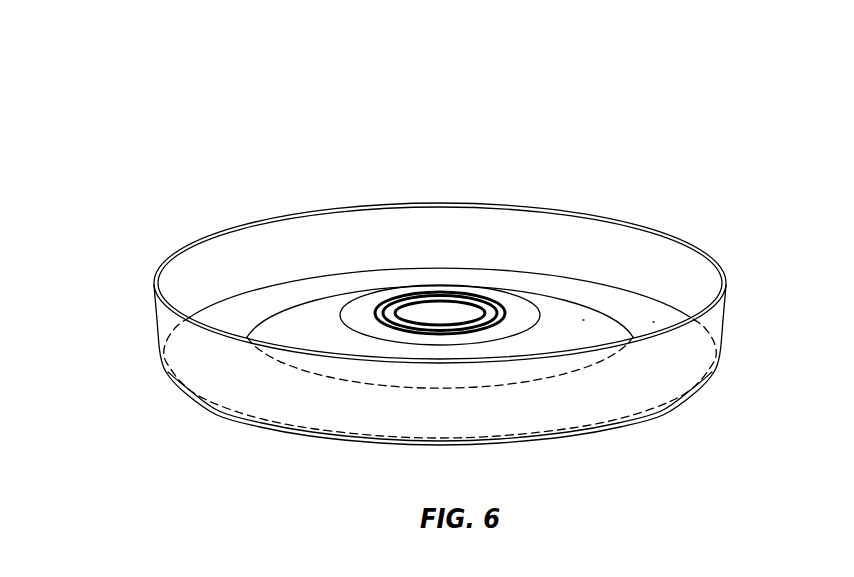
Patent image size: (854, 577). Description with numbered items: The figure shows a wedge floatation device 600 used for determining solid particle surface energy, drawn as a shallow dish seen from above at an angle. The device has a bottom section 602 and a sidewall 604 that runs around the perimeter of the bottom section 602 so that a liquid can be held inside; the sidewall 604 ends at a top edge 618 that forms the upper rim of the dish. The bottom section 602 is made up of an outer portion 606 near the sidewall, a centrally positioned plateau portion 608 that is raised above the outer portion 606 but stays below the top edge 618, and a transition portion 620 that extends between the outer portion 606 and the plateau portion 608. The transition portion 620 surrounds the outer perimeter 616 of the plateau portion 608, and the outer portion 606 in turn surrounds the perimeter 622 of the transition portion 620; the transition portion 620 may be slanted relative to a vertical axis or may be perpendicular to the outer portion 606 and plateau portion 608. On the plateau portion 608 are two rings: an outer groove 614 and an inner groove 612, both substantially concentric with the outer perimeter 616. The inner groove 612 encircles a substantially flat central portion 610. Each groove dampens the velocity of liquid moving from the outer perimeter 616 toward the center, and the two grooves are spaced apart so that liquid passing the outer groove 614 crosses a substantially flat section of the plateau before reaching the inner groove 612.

The wedge floatation device 600 is at (126, 126).
The bottom section 602 is at (458, 272).
The sidewall 604 is at (219, 256).
The outer portion 606 is at (699, 249).
The plateau portion 608 is at (520, 310).
The central portion 610 is at (467, 312).
The inner groove 612 is at (443, 296).
The outer groove 614 is at (415, 291).
The outer perimeter 616 is at (352, 294).
The top edge 618 is at (160, 281).
The transition portion 620 is at (628, 337).
The perimeter 622 is at (653, 322).